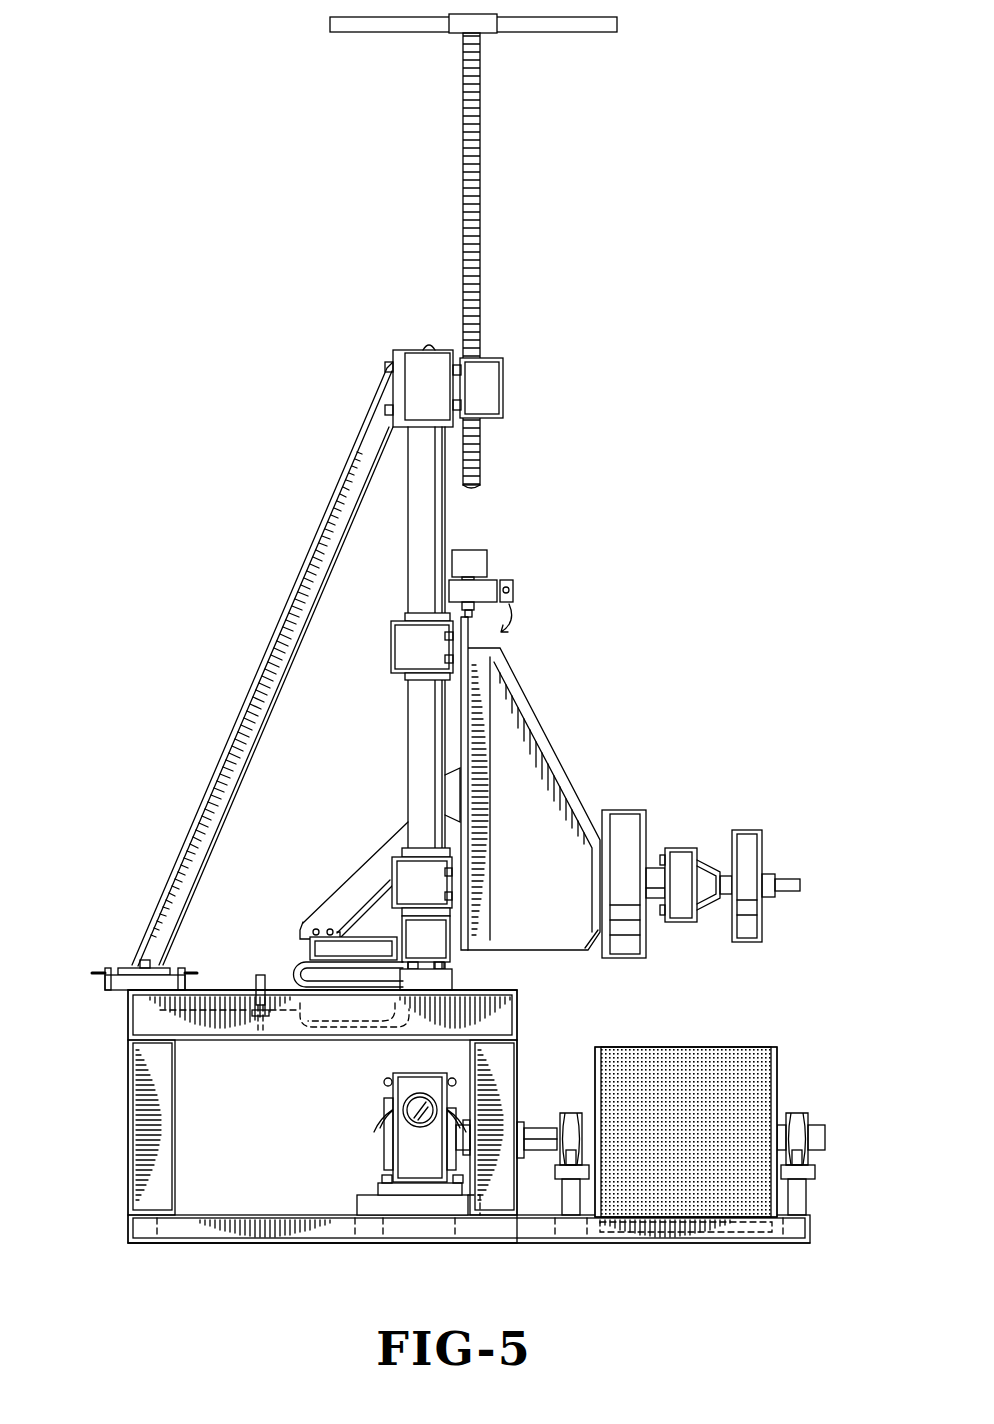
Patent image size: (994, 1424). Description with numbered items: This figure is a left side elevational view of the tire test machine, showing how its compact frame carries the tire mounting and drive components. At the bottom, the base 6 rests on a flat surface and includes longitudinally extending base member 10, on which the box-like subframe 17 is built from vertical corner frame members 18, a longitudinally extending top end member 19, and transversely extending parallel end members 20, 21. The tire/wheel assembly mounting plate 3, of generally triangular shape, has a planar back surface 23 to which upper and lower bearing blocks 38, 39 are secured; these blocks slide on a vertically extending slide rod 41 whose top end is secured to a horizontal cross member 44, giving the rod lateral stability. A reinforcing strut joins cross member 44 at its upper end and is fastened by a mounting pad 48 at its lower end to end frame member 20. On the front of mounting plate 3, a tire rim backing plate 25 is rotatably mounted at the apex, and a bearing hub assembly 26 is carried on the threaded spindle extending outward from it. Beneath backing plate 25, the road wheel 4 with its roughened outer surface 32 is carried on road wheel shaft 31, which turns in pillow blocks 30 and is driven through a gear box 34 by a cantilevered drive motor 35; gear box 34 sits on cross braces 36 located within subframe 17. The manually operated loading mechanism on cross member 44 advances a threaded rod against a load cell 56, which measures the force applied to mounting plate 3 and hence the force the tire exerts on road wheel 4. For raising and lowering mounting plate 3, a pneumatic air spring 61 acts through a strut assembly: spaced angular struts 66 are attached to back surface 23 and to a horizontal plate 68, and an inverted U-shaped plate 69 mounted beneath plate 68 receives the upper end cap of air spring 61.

The tire/wheel assembly mounting plate 3 is at (536, 697).
The road wheel 4 is at (777, 1065).
The base 6 is at (180, 1243).
The longitudinally extending base member 10 is at (238, 1233).
The subframe 17 is at (128, 1103).
The corner frame member 18 is at (138, 1172).
The top end member 19 is at (233, 1008).
The end frame member 20 is at (145, 1017).
The end frame member 21 is at (435, 1003).
The back surface 23 is at (465, 740).
The tire rim backing plate 25 is at (625, 820).
The bearing hub assembly 26 is at (684, 850).
The pillow block 30 is at (808, 1197).
The road wheel shaft 31 is at (825, 1138).
The roughened outer surface 32 is at (712, 1045).
The gear box 34 is at (410, 1160).
The drive motor 35 is at (373, 1114).
The cross brace 36 is at (418, 1210).
The upper bearing block 38 is at (405, 646).
The lower bearing block 39 is at (400, 850).
The slide rod 41 is at (420, 588).
The horizontal cross member 44 is at (425, 385).
The mounting pad 48 is at (120, 966).
The load cell 56 is at (480, 567).
The pneumatic air spring 61 is at (335, 980).
The strut 66 is at (355, 890).
The horizontal plate 68 is at (360, 927).
The inverted U-shaped plate 69 is at (320, 950).